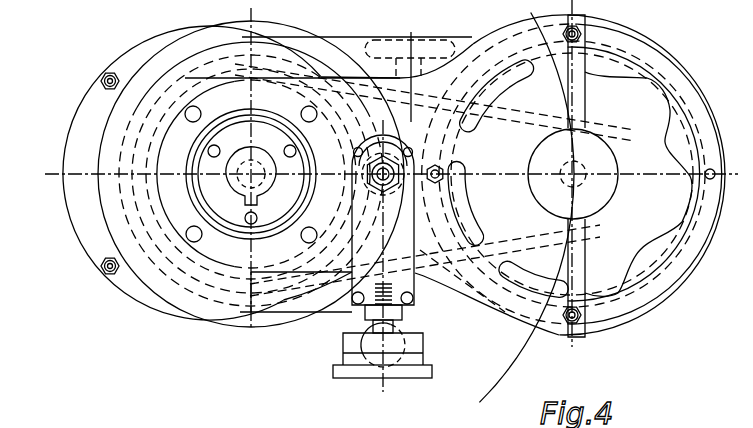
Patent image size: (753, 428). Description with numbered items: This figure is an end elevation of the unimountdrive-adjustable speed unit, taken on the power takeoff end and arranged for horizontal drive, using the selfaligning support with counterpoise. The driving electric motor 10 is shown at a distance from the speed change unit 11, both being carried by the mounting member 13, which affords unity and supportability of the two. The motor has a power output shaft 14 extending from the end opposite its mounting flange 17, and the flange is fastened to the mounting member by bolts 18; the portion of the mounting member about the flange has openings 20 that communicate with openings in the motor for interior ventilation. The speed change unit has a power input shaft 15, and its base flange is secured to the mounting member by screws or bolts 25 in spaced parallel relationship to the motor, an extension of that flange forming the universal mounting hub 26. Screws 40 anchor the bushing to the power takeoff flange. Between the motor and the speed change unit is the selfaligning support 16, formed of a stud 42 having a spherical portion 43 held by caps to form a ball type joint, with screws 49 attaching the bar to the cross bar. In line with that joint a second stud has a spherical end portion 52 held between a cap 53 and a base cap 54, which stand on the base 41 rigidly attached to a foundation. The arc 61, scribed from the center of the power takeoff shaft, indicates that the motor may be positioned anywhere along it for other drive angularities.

The driving electric motor 10 is at (706, 80).
The speed change unit 11 is at (48, 238).
The mounting member 13 is at (337, 82).
The power output shaft 14 is at (628, 191).
The power input shaft 15 is at (267, 150).
The selfaligning support 16 is at (319, 340).
The mounting flange 17 is at (657, 52).
The bolts 18 is at (590, 18).
The openings 20 is at (508, 178).
The screws or bolts 25 is at (200, 244).
The universal mounting hub 26 is at (246, 239).
The screws 40 is at (258, 216).
The base 41 is at (380, 379).
The stud 42 is at (386, 187).
The spherical portion 43 is at (356, 214).
The screws 49 is at (352, 304).
The spherical end portion 52 is at (410, 343).
The cap 53 is at (406, 334).
The base cap 54 is at (423, 373).
The arc 61 is at (512, 371).